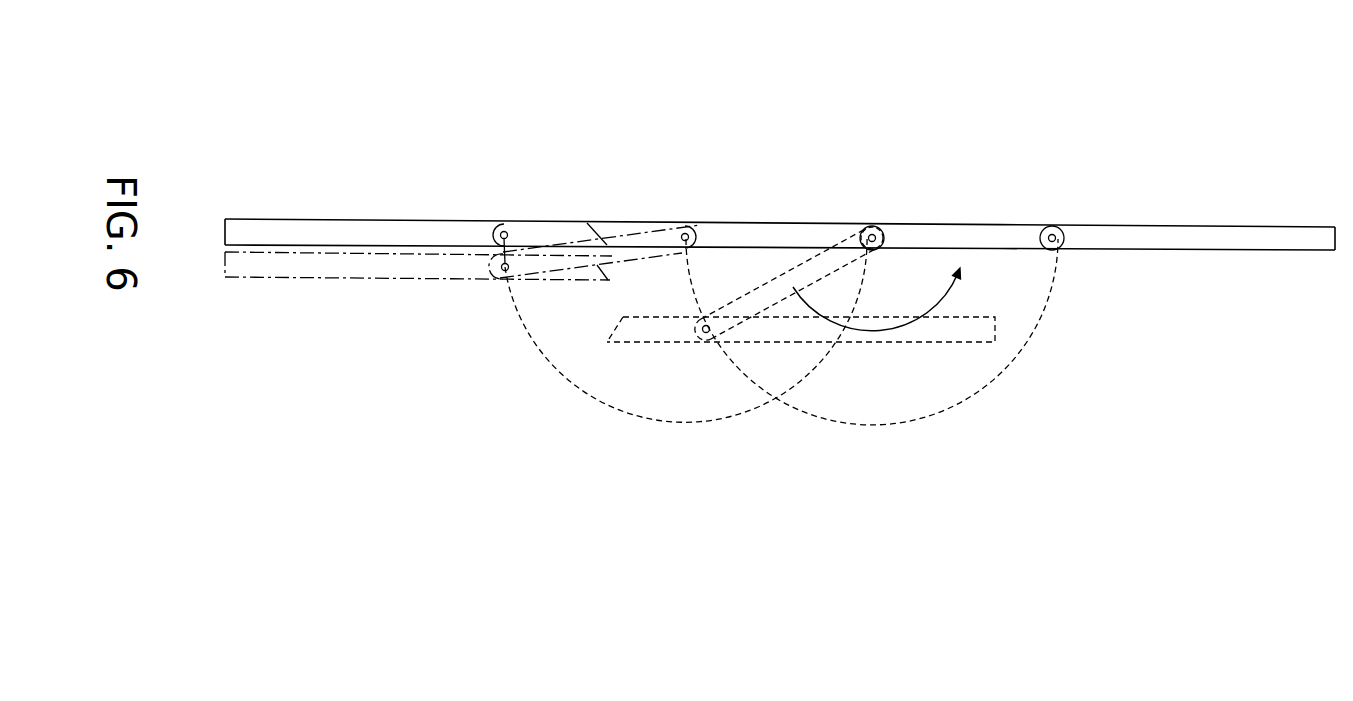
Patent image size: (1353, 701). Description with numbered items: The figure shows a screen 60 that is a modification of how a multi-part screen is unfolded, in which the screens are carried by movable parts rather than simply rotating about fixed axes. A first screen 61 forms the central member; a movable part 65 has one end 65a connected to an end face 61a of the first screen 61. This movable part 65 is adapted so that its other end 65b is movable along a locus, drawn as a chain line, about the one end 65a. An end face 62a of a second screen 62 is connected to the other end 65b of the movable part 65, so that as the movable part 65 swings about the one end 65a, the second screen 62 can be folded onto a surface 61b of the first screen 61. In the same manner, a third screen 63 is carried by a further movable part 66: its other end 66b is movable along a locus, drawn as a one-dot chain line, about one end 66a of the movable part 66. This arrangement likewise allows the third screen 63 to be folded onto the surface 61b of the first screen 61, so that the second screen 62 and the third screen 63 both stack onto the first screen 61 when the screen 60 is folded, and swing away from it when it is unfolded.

The screen 60 is at (1181, 136).
The first screen 61 is at (780, 225).
The end face of first screen 61a is at (720, 237).
The surface of first screen 61b is at (747, 249).
The second screen 62 is at (1280, 227).
The end face of second screen 62a is at (930, 335).
The third screen 63 is at (299, 219).
The movable part 65 is at (835, 257).
The one end of movable part 65a is at (870, 235).
The other end of movable part 65b is at (703, 337).
The movable part 66 is at (645, 235).
The one end of movable part 66a is at (686, 232).
The other end of movable part 66b is at (498, 277).